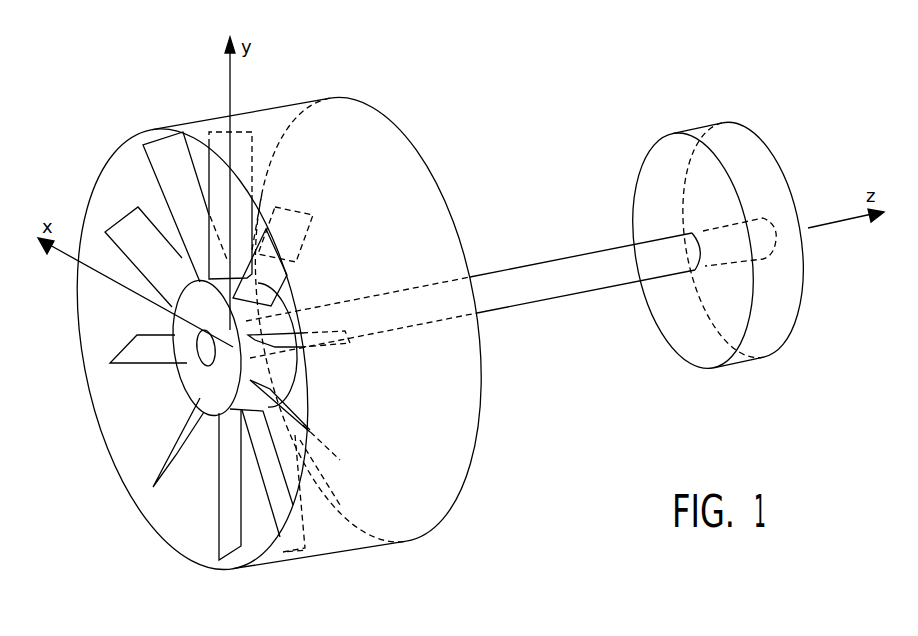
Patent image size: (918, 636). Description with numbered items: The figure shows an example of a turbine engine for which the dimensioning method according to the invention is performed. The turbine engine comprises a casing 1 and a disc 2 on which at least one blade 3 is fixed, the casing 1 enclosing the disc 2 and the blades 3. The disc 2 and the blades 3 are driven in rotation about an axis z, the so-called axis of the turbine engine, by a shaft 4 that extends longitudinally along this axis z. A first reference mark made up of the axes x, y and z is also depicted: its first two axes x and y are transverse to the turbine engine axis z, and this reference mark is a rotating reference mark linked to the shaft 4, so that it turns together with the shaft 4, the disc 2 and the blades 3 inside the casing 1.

The casing 1 is at (346, 97).
The disc 2 is at (187, 380).
The blade 3 is at (157, 150).
The shaft 4 is at (580, 257).